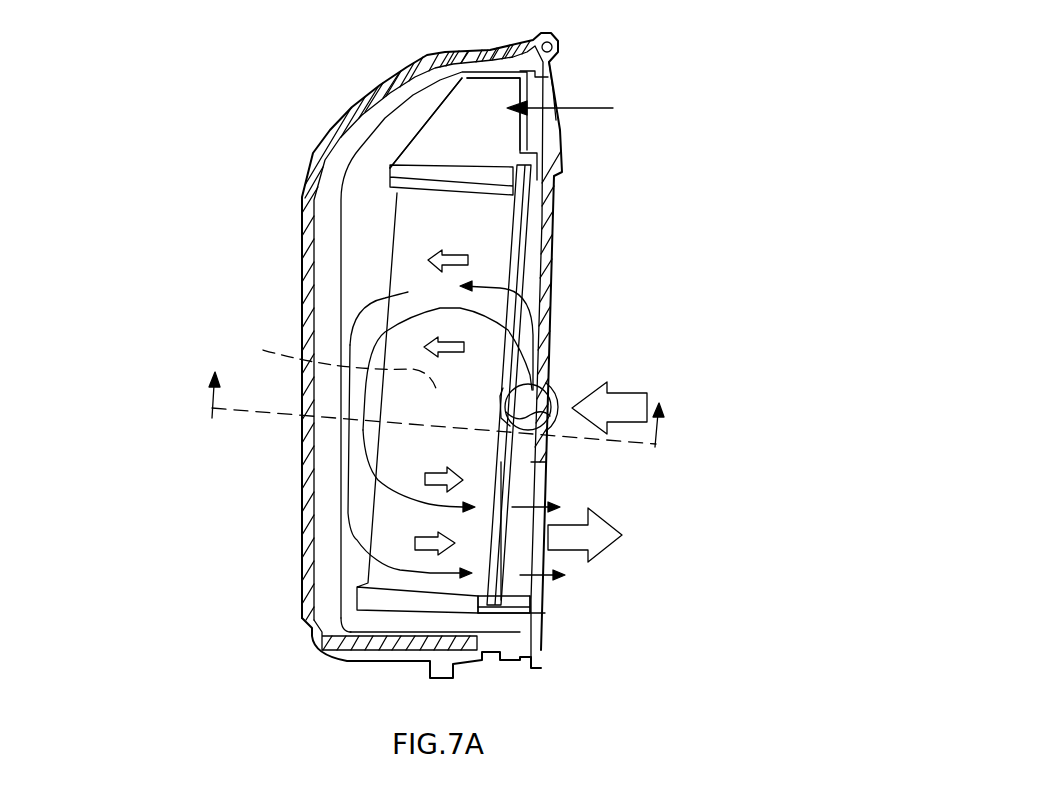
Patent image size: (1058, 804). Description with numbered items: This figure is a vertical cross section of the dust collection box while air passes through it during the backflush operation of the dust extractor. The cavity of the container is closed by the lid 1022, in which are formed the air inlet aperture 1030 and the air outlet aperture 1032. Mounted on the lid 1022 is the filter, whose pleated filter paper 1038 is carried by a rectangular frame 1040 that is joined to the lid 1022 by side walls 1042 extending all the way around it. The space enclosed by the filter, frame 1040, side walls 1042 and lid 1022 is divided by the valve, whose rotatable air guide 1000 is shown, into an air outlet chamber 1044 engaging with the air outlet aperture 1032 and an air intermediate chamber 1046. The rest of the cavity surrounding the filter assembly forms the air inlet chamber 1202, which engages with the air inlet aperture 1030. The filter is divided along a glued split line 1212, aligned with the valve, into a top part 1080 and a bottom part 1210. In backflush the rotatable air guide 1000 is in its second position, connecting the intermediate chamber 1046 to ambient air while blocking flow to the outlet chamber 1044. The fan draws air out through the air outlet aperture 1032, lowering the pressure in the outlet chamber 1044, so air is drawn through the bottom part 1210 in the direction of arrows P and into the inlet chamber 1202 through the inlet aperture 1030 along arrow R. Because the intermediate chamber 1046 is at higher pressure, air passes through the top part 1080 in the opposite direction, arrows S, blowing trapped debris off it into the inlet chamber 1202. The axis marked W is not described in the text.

The rotatable air guide 1000 is at (545, 403).
The lid 1022 is at (552, 253).
The air inlet aperture 1030 is at (552, 127).
The air outlet aperture 1032 is at (533, 597).
The pleated filter paper 1038 is at (413, 250).
The frame 1040 is at (507, 193).
The side walls 1042 is at (513, 618).
The air outlet chamber 1044 is at (520, 547).
The air intermediate chamber 1046 is at (538, 283).
The top part of the filter 1080 is at (408, 290).
The air inlet chamber 1202 is at (405, 153).
The bottom part of the filter 1210 is at (397, 515).
The glued split line 1212 is at (318, 357).
The arrow R is at (560, 97).
The width direction W is at (436, 413).
The arrows S is at (446, 292).
The arrows P is at (439, 499).